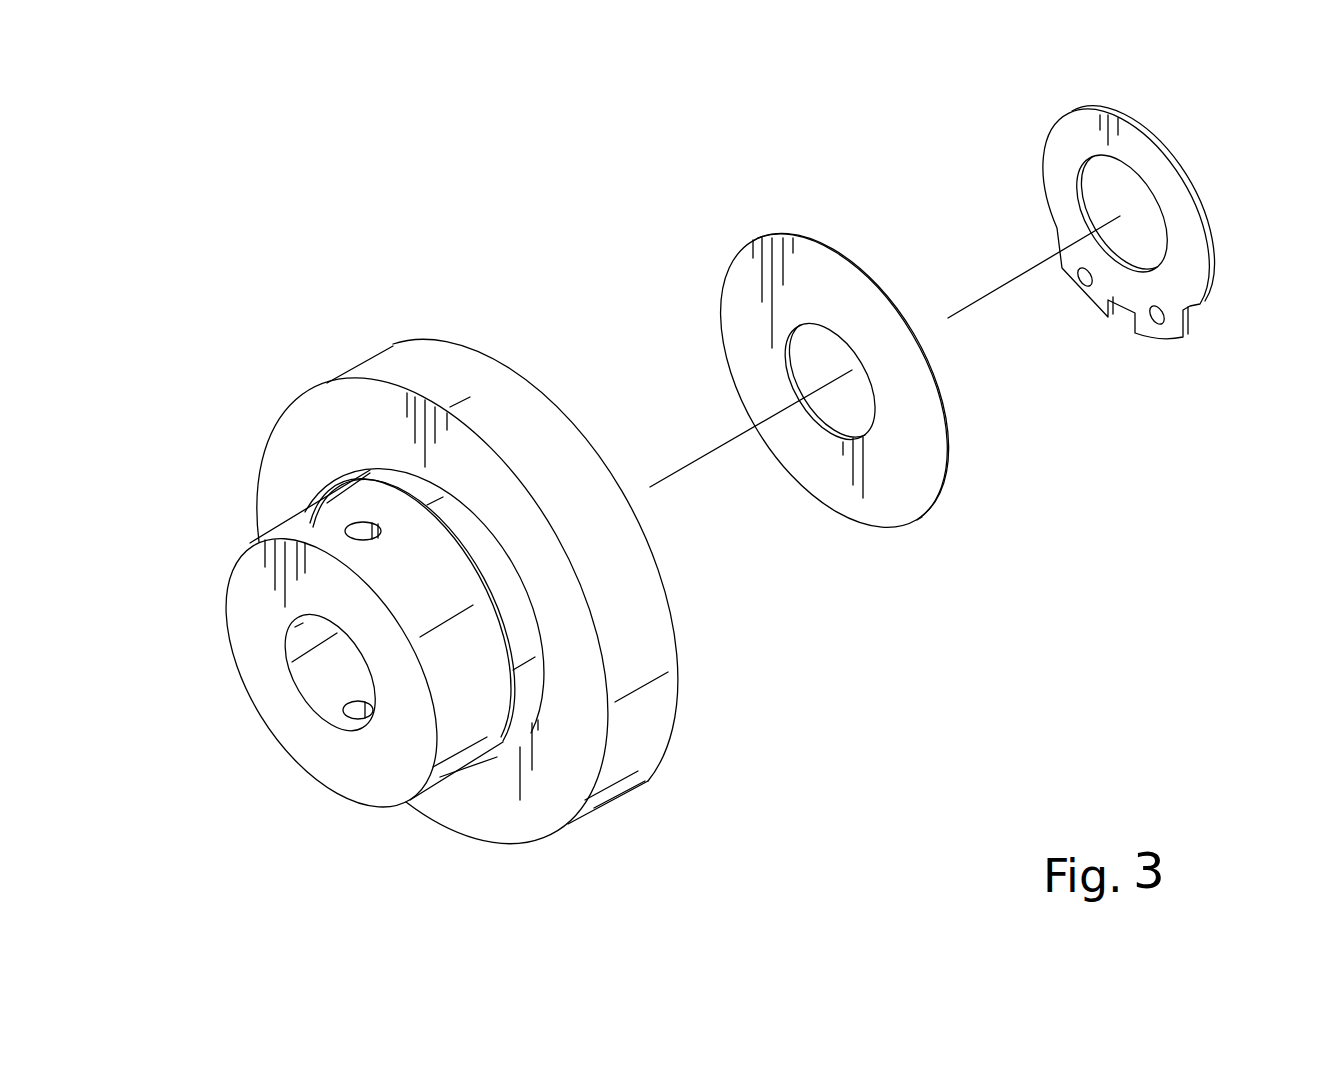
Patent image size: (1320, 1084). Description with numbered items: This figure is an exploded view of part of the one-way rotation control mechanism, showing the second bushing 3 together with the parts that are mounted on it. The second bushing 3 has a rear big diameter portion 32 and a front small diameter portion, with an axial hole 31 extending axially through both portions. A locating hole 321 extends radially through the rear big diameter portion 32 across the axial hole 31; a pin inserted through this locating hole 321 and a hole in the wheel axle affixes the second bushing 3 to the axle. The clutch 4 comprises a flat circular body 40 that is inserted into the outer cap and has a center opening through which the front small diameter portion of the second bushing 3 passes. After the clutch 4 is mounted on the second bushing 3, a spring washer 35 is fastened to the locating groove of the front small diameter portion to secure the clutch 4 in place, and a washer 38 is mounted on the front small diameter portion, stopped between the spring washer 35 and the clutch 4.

The second bushing 3 is at (349, 553).
The axial hole 31 is at (288, 662).
The rear big diameter portion 32 is at (456, 586).
The locating hole 321 is at (364, 528).
The spring washer 35 is at (1195, 192).
The washer 38 is at (913, 518).
The clutch 4 is at (527, 604).
The flat circular body 40 is at (680, 707).